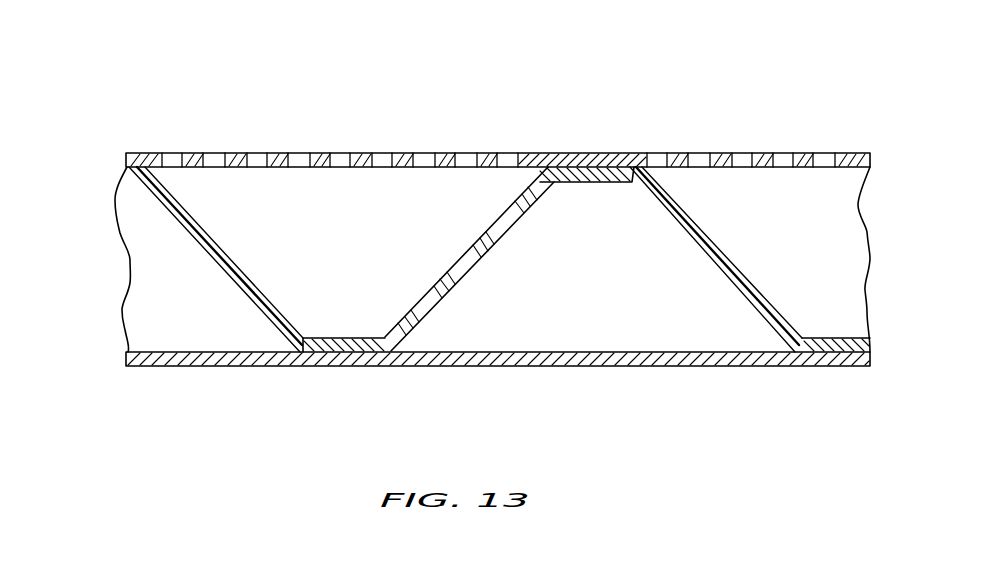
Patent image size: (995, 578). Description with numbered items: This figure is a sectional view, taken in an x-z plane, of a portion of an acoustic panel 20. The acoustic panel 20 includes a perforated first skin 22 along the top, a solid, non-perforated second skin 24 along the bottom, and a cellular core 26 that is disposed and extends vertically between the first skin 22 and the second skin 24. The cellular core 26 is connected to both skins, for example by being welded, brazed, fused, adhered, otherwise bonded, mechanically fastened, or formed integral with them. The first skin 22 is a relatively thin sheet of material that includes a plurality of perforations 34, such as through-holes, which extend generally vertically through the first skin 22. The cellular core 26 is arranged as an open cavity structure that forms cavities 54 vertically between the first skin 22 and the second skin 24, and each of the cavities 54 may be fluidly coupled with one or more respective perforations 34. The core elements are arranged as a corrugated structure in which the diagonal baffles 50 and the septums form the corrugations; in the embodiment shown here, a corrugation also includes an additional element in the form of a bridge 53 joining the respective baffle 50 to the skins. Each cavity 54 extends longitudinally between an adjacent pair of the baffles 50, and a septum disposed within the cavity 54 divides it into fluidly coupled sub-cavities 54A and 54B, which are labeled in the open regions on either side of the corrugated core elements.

The acoustic panel 20 is at (798, 106).
The first skin 22 is at (127, 161).
The second skin 24 is at (127, 358).
The cellular core 26 is at (106, 282).
The perforations 34 is at (293, 155).
The baffles 50 is at (272, 322).
The bridge 53 is at (591, 166).
The cavities 54 is at (427, 316).
The sub-cavity 54A is at (357, 264).
The sub-cavity 54B is at (213, 313).